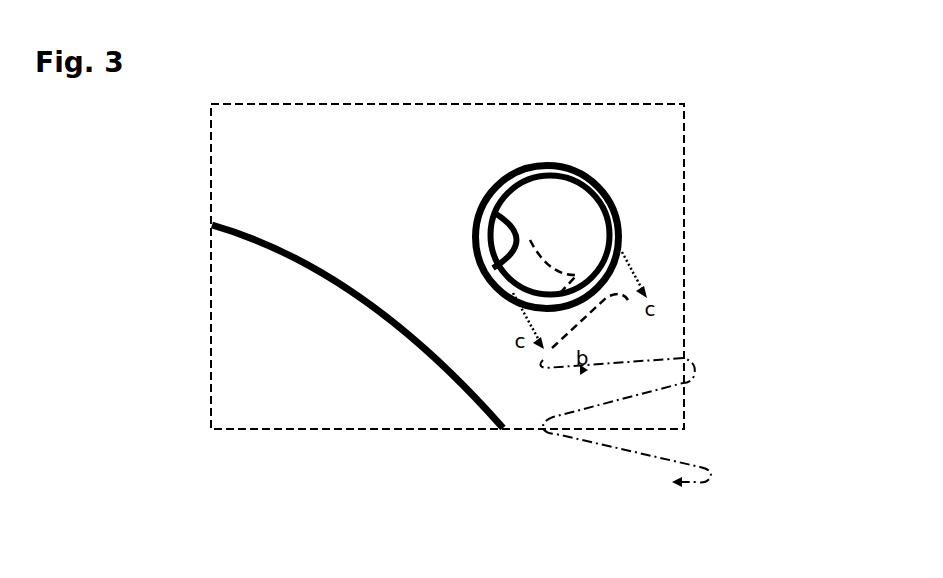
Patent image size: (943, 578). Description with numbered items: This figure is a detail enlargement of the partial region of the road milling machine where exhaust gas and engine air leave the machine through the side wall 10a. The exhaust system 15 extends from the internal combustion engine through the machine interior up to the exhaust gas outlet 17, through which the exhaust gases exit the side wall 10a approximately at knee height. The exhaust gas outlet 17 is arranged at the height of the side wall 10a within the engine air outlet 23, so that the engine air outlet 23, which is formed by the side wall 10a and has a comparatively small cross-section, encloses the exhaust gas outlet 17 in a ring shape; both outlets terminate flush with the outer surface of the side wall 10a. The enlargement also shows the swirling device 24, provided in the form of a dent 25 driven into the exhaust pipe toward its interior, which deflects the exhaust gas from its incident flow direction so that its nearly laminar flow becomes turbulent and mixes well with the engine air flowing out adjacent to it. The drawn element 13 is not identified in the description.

The side wall 10a is at (294, 157).
The inner surface 13 is at (318, 382).
The exhaust system 15 is at (578, 237).
The exhaust gas outlet 17 is at (555, 203).
The engine air outlet 23 is at (543, 312).
The swirling device 24 is at (483, 203).
The dent 25 is at (487, 280).